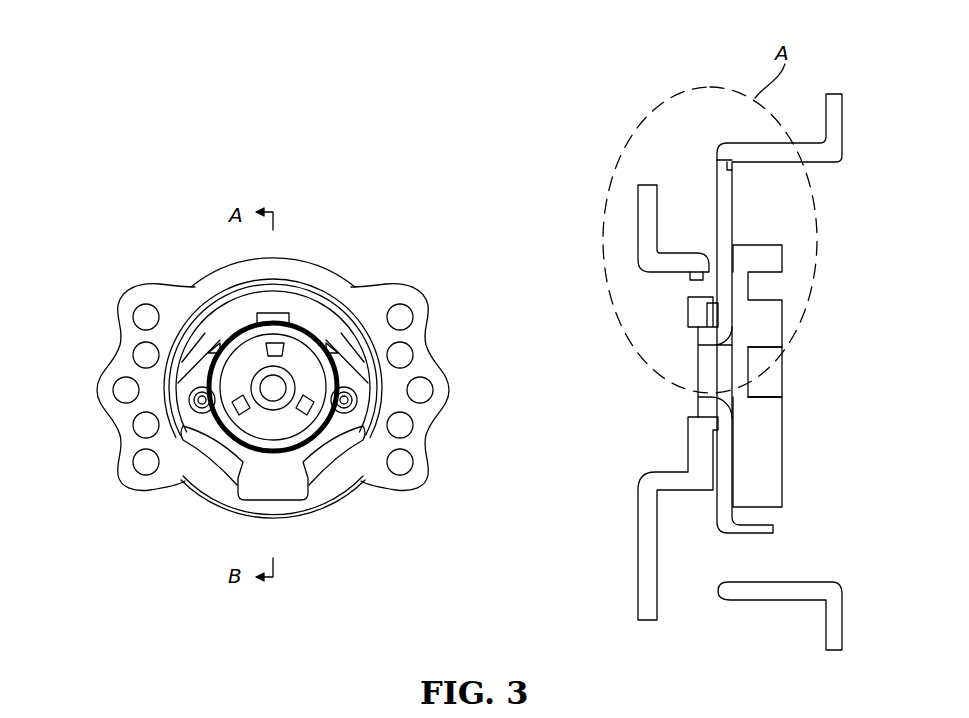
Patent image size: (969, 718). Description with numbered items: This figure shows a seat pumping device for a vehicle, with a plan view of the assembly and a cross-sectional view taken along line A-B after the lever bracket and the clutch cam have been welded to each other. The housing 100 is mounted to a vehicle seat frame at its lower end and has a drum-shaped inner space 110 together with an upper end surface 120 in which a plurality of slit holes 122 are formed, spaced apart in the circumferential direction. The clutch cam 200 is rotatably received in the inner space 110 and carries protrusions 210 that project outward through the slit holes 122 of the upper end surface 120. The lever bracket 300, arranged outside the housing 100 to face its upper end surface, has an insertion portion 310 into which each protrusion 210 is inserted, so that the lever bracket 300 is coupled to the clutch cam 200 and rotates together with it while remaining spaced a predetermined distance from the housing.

The housing 100 is at (127, 305).
The inner space 110 is at (823, 237).
The upper end surface 120 is at (725, 148).
The slit hole 122 is at (736, 282).
The clutch cam 200 is at (768, 458).
The protrusion 210 is at (233, 414).
The lever bracket 300 is at (290, 488).
The insertion portion 310 is at (695, 290).